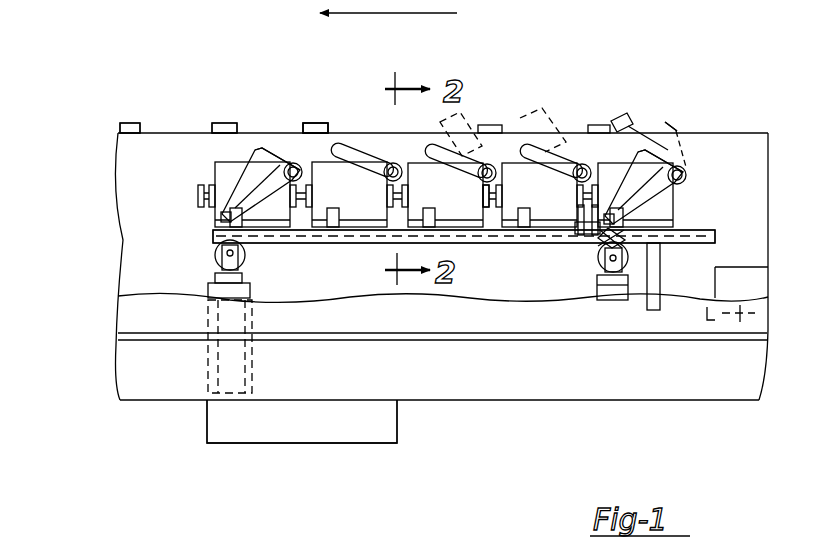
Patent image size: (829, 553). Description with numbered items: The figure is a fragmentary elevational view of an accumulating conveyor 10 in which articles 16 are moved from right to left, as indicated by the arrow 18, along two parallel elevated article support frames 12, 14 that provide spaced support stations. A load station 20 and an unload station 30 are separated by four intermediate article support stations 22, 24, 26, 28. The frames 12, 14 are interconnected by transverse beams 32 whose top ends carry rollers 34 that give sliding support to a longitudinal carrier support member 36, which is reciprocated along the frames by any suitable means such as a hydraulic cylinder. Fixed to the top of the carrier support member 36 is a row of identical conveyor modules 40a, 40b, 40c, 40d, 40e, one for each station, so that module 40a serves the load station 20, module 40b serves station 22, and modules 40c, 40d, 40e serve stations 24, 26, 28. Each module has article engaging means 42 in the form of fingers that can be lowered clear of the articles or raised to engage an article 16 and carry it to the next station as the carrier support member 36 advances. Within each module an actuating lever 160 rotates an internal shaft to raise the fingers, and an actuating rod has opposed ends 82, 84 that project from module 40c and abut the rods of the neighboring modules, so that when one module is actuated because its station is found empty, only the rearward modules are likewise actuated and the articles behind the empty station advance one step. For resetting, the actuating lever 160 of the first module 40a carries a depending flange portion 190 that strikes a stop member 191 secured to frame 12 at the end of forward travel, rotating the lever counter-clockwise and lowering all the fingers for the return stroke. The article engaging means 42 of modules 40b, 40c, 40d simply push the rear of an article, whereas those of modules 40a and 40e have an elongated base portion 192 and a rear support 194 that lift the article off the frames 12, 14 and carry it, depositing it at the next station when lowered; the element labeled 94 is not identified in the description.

The accumulating conveyor 10 is at (478, 432).
The article support frame 12 is at (738, 133).
The article support frame 14 is at (527, 131).
The article 16 is at (135, 123).
The arrow 18 is at (437, 14).
The load station 20 is at (670, 63).
The intermediate article support station 22 is at (494, 102).
The intermediate article support station 24 is at (358, 124).
The intermediate article support station 26 is at (310, 98).
The intermediate article support station 28 is at (263, 98).
The unload station 30 is at (110, 129).
The transverse beam 32 is at (213, 287).
The roller 34 is at (213, 262).
The carrier support member 36 is at (650, 224).
The conveyor module 40a is at (672, 213).
The conveyor module 40b is at (573, 228).
The conveyor module 40c is at (470, 229).
The conveyor module 40d is at (332, 228).
The conveyor module 40e is at (250, 230).
The article engaging means 42 is at (337, 153).
The actuating rod end 82 is at (383, 243).
The actuating rod end 84 is at (492, 225).
The lever arm 94 is at (640, 153).
The actuating lever 160 is at (218, 216).
The depending flange portion 190 is at (600, 250).
The stop member 191 is at (565, 233).
The elongated base portion 192 is at (218, 177).
The rear support 194 is at (257, 155).